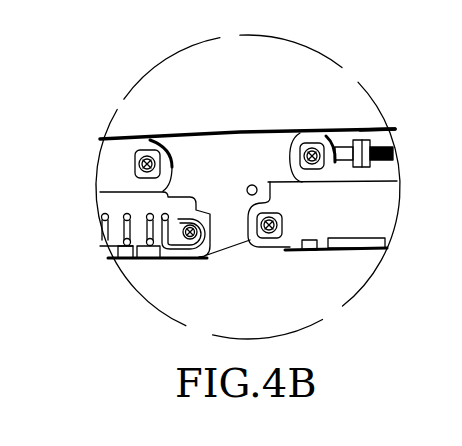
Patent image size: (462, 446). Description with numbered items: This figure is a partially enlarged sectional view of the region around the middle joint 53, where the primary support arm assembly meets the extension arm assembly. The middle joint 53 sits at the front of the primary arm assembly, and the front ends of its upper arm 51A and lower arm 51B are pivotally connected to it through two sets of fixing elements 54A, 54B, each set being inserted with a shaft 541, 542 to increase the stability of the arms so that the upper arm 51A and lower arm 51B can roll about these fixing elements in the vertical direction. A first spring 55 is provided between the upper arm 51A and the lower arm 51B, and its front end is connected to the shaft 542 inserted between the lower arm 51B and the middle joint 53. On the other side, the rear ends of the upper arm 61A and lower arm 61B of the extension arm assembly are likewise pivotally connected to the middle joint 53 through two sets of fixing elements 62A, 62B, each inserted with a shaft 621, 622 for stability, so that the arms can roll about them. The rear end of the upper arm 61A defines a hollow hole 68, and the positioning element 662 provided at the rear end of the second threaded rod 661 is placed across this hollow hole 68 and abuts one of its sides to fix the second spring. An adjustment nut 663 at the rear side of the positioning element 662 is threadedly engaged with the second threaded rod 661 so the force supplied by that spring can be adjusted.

The upper arm 51A is at (108, 138).
The lower arm 51B is at (158, 260).
The middle joint 53 is at (215, 133).
The fixing elements 54A is at (145, 150).
The fixing elements 54B is at (186, 224).
The shaft 541 is at (135, 165).
The shaft 542 is at (192, 240).
The first spring 55 is at (120, 250).
The upper arm 61A is at (370, 132).
The lower arm 61B is at (389, 249).
The fixing elements 62A is at (312, 146).
The fixing elements 62B is at (277, 248).
The shaft 621 is at (300, 157).
The shaft 622 is at (283, 225).
The second threaded rod 661 is at (379, 165).
The positioning element 662 is at (374, 146).
The adjustment nut 663 is at (362, 167).
The hollow hole 68 is at (342, 147).